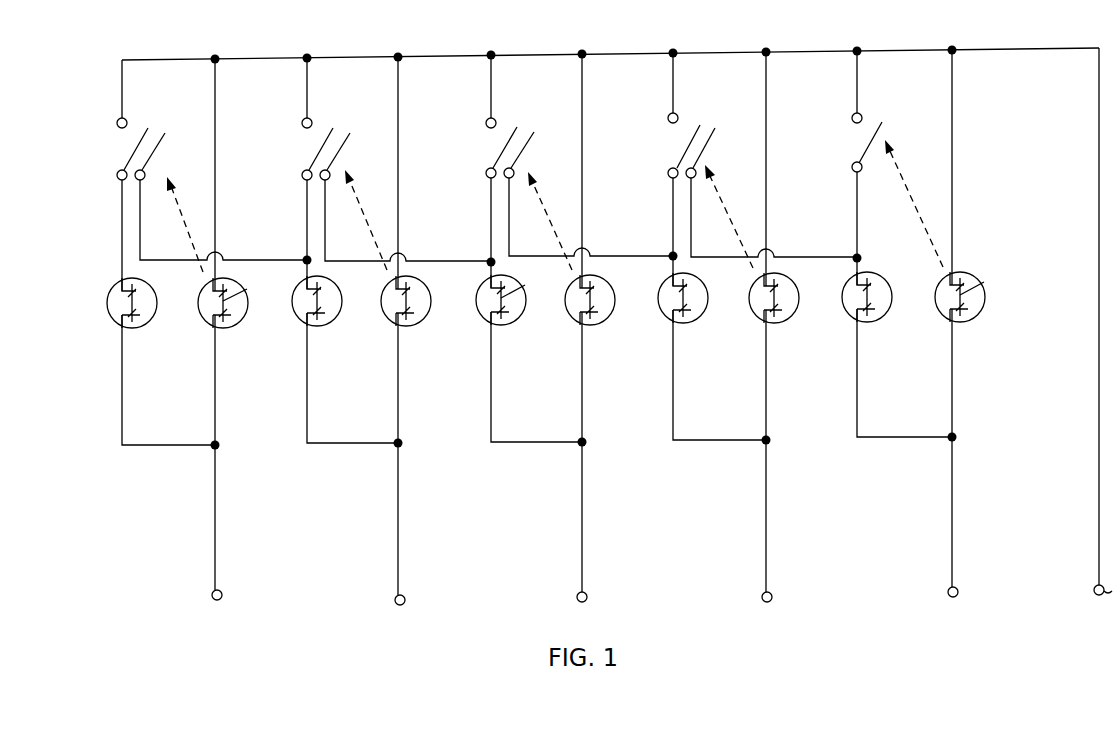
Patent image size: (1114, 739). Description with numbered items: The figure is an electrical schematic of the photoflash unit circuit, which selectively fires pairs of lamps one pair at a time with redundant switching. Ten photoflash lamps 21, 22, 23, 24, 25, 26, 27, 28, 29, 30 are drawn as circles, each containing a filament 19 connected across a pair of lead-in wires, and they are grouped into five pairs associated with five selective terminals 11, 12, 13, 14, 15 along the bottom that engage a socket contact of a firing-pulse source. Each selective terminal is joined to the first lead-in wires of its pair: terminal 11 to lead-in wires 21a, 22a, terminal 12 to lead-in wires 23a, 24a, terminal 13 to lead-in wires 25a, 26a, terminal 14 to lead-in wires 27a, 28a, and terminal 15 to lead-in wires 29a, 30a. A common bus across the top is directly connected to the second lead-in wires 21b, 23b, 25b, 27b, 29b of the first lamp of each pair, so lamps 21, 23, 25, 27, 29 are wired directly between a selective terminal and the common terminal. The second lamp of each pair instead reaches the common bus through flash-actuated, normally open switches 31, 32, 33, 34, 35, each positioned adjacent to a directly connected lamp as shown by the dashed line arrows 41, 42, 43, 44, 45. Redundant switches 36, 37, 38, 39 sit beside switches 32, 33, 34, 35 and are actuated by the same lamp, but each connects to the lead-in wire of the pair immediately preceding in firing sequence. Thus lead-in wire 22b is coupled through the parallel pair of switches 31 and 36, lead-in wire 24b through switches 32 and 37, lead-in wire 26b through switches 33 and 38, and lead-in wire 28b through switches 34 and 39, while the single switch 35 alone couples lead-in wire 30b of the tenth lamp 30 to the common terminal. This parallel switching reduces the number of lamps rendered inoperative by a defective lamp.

The selective terminal 11 is at (958, 593).
The selective terminal 12 is at (772, 598).
The selective terminal 13 is at (587, 598).
The selective terminal 14 is at (405, 601).
The selective terminal 15 is at (222, 596).
The filament 19 is at (247, 289).
The photoflash lamp 21 is at (976, 316).
The photoflash lamp 22 is at (883, 316).
The photoflash lamp 23 is at (790, 317).
The photoflash lamp 24 is at (699, 317).
The photoflash lamp 25 is at (606, 319).
The photoflash lamp 26 is at (517, 319).
The photoflash lamp 27 is at (422, 320).
The photoflash lamp 28 is at (333, 320).
The photoflash lamp 29 is at (239, 322).
The photoflash lamp 30 is at (148, 322).
The lead-in wire 21a is at (952, 403).
The lead-in wire 22a is at (857, 403).
The lead-in wire 23a is at (766, 405).
The lead-in wire 24a is at (673, 405).
The lead-in wire 25a is at (582, 407).
The lead-in wire 26a is at (491, 407).
The lead-in wire 27a is at (398, 408).
The lead-in wire 28a is at (307, 408).
The lead-in wire 29a is at (215, 410).
The lead-in wire 30a is at (122, 410).
The lead-in wire 21b is at (952, 137).
The lead-in wire 22b is at (857, 218).
The lead-in wire 23b is at (766, 137).
The lead-in wire 24b is at (673, 221).
The lead-in wire 25b is at (582, 140).
The lead-in wire 26b is at (491, 225).
The lead-in wire 27b is at (398, 143).
The lead-in wire 28b is at (307, 225).
The lead-in wire 29b is at (215, 143).
The lead-in wire 30b is at (122, 225).
The flash-actuated normally open switch 31 is at (866, 147).
The flash-actuated normally open switch 32 is at (687, 148).
The flash-actuated normally open switch 33 is at (505, 150).
The flash-actuated normally open switch 34 is at (321, 152).
The flash-actuated normally open switch 35 is at (136, 152).
The redundant switch 36 is at (700, 148).
The redundant switch 37 is at (519, 151).
The redundant switch 38 is at (339, 154).
The redundant switch 39 is at (154, 154).
The dashed line arrow 41 is at (917, 210).
The dashed line arrow 42 is at (727, 212).
The dashed line arrow 43 is at (546, 213).
The dashed line arrow 44 is at (365, 217).
The dashed line arrow 45 is at (182, 217).